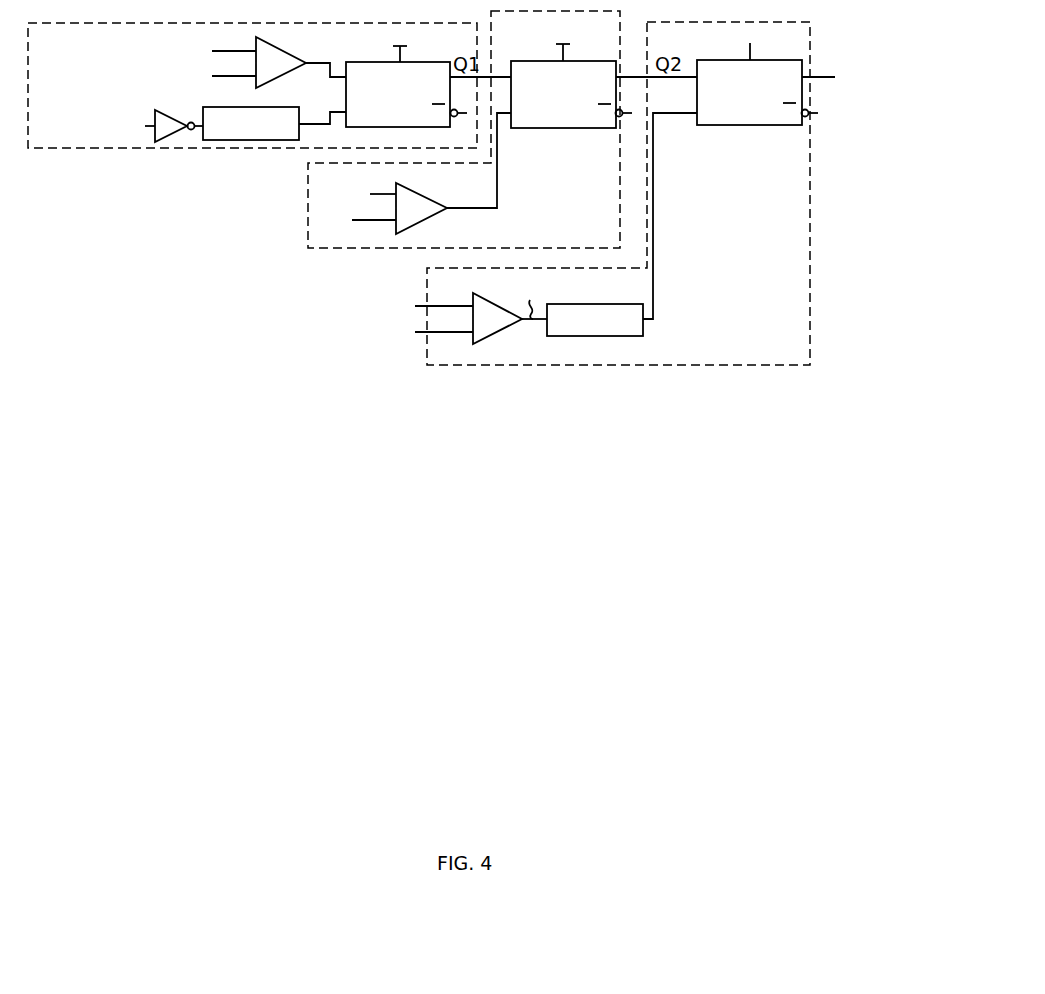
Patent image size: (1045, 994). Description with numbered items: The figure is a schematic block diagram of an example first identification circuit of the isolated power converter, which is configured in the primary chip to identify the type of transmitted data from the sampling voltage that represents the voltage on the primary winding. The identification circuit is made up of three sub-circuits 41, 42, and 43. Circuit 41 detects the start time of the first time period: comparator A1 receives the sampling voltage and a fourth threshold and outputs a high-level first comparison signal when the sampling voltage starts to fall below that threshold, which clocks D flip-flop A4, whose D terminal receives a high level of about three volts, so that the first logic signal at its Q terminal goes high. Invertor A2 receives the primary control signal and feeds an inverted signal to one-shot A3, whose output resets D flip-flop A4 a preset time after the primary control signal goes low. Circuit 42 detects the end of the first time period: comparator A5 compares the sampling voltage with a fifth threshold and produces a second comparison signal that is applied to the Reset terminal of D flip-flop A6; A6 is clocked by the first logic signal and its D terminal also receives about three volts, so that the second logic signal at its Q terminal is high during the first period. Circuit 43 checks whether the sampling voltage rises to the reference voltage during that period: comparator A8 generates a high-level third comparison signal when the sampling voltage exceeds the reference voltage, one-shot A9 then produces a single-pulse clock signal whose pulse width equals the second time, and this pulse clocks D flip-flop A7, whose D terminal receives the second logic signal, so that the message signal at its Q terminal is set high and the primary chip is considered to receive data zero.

The circuit 41 is at (73, 51).
The circuit 42 is at (604, 236).
The circuit 43 is at (793, 359).
The comparator A1 is at (290, 73).
The invertor A2 is at (175, 114).
The one-shot A3 is at (251, 113).
The D flip-flop A4 is at (423, 109).
The comparator A5 is at (427, 218).
The D flip-flop A6 is at (590, 108).
The D flip-flop A7 is at (762, 111).
The comparator A8 is at (505, 329).
The one-shot A9 is at (595, 332).